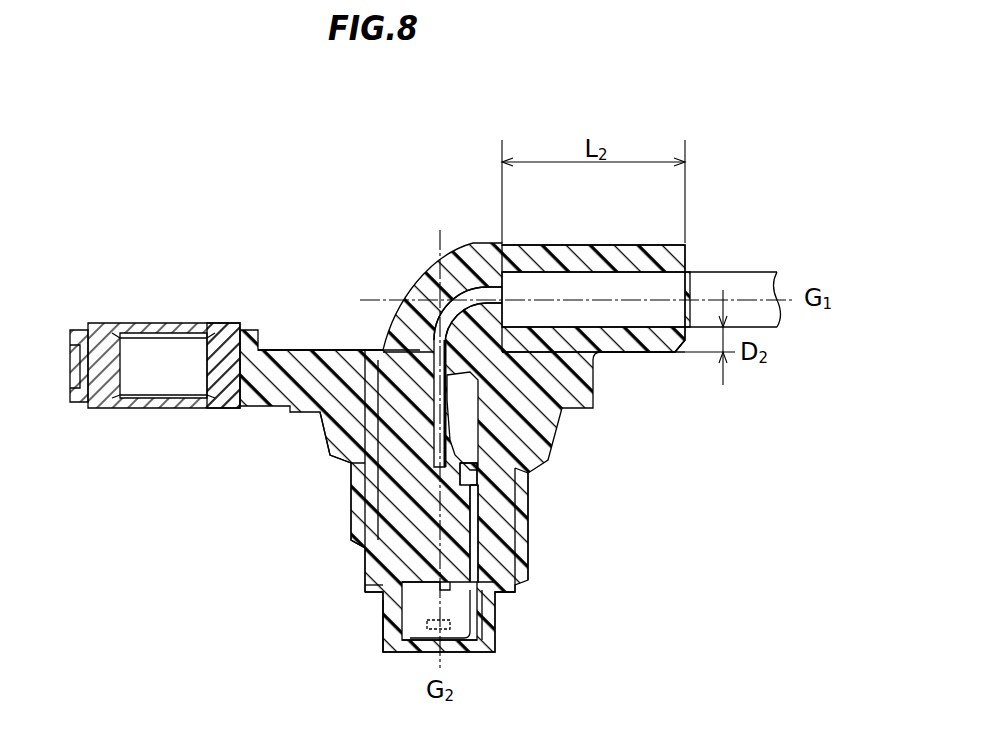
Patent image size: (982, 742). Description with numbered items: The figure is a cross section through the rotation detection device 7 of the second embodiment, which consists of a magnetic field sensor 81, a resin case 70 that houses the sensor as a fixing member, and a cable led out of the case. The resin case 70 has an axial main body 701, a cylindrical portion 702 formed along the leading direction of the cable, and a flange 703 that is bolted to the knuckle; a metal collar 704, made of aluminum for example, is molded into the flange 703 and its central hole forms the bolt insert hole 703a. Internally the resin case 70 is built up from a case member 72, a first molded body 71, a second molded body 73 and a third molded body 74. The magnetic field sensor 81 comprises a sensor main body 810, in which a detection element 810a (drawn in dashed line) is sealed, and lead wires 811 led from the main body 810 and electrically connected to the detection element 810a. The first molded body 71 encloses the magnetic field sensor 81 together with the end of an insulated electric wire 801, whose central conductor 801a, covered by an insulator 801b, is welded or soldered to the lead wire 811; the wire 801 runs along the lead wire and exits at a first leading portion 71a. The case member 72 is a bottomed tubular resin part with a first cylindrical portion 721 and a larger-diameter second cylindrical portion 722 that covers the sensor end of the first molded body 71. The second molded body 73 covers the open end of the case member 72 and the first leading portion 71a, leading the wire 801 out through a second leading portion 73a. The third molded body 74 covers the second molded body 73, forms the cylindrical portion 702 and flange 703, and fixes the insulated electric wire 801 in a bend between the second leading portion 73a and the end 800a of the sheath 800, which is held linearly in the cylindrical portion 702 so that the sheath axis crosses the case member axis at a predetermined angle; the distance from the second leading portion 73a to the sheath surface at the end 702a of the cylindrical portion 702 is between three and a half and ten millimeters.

The rotation detection device 7 is at (318, 215).
The resin case 70 is at (265, 450).
The first molded body 71 is at (398, 562).
The first leading portion 71a is at (408, 350).
The case member 72 is at (306, 578).
The first cylindrical portion 721 is at (392, 628).
The second cylindrical portion 722 is at (368, 582).
The second molded body 73 is at (343, 490).
The second leading portion 73a is at (419, 346).
The third molded body 74 is at (337, 448).
The axial main body 701 is at (515, 640).
The cylindrical portion 702 is at (690, 197).
The end of the cylindrical portion 702a is at (688, 259).
The flange 703 is at (207, 277).
The bolt insert hole 703a is at (133, 344).
The collar 704 is at (220, 327).
The sheath 800 is at (583, 272).
The end of the sheath 800a is at (497, 264).
The insulated electric wire 801 is at (618, 465).
The central conductor 801a is at (478, 533).
The insulator 801b is at (476, 480).
The magnetic field sensor 81 is at (608, 565).
The sensor main body 810 is at (464, 620).
The detection element 810a is at (438, 630).
The lead wire 811 is at (496, 582).